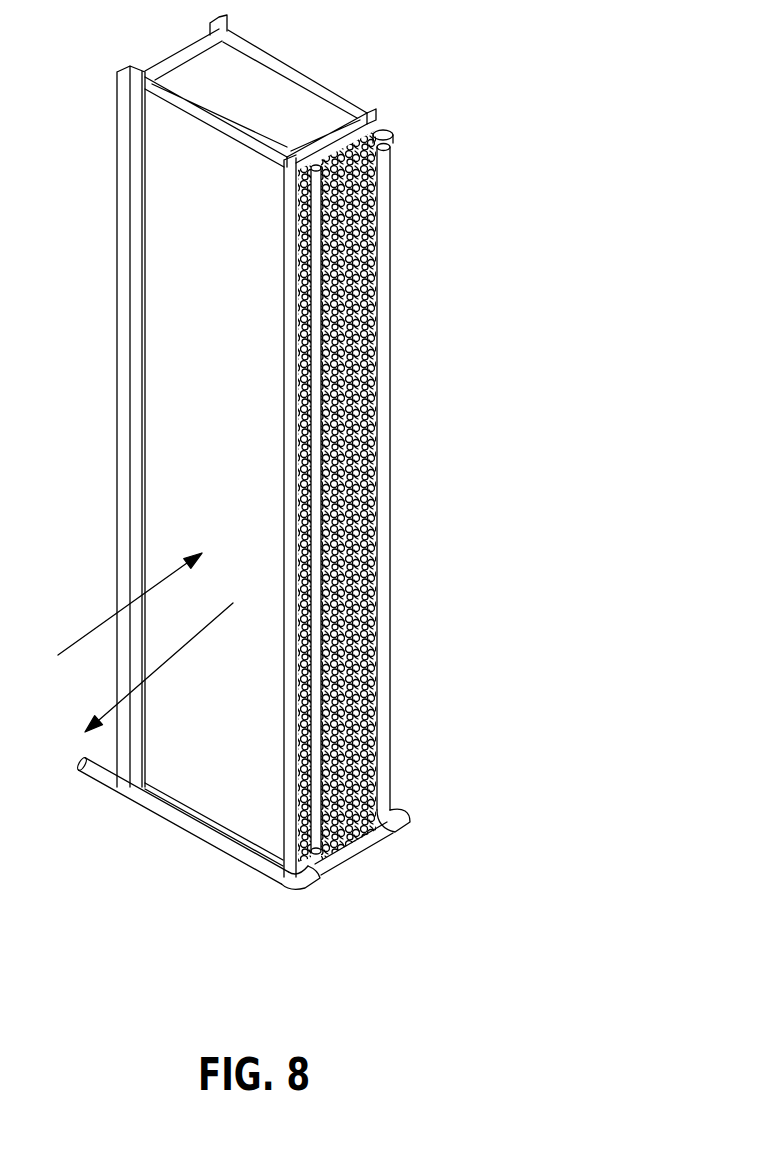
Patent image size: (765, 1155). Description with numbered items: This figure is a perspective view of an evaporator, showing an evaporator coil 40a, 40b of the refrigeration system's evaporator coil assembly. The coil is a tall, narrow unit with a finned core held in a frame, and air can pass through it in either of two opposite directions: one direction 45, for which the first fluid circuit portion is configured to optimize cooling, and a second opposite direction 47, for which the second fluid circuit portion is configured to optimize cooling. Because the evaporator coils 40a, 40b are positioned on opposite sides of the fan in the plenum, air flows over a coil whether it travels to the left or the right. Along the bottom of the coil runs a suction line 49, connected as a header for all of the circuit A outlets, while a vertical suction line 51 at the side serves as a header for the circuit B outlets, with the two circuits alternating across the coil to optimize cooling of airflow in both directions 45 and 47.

The evaporator coil 40a is at (325, 466).
The evaporator coil 40b is at (325, 466).
The direction 45 is at (173, 658).
The second opposite direction 47 is at (157, 592).
The suction line 49 is at (210, 845).
The suction line 51 is at (392, 770).